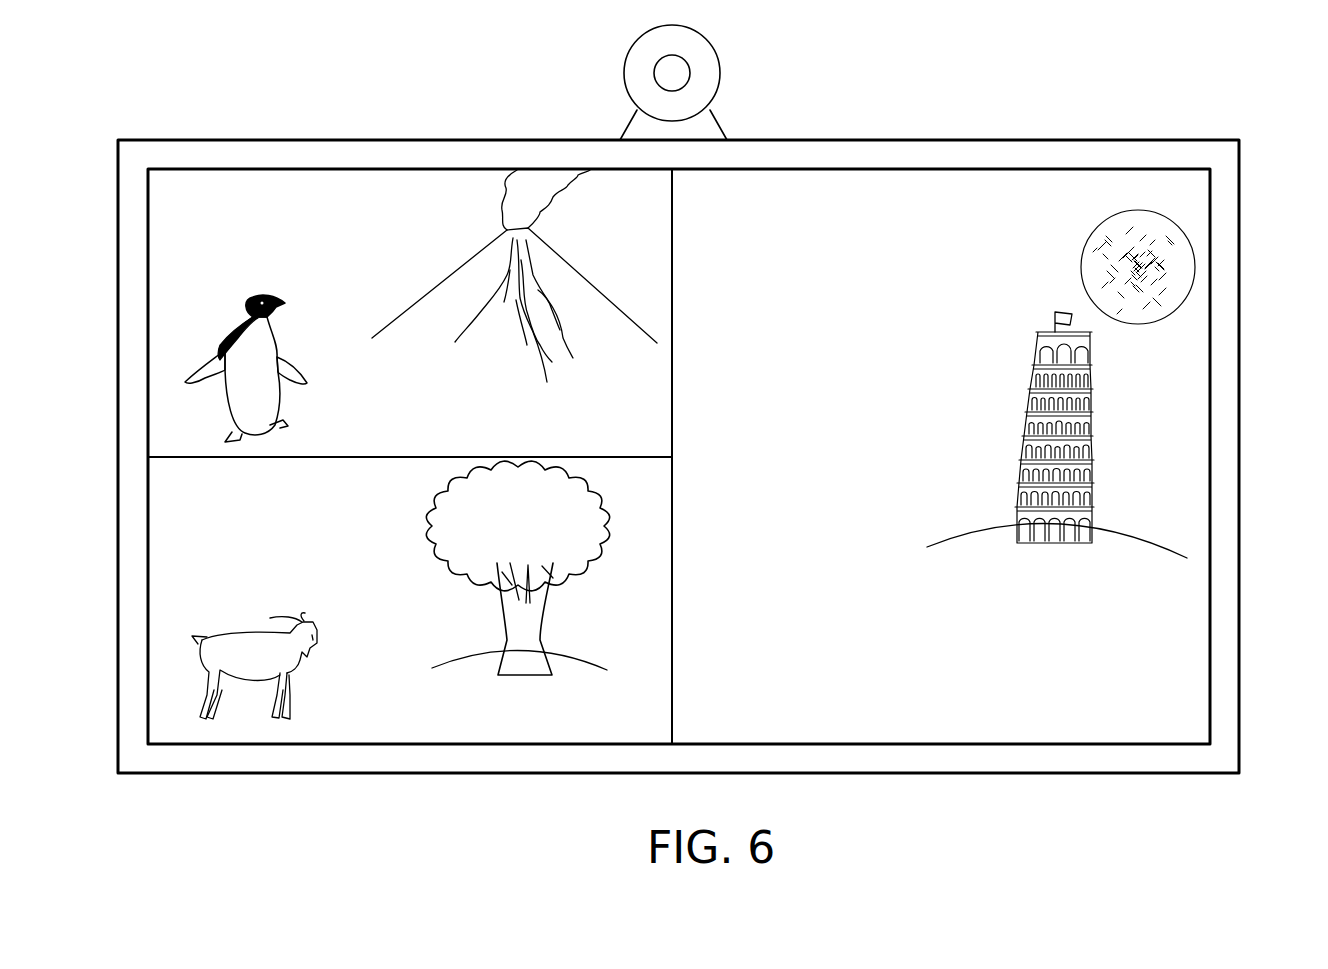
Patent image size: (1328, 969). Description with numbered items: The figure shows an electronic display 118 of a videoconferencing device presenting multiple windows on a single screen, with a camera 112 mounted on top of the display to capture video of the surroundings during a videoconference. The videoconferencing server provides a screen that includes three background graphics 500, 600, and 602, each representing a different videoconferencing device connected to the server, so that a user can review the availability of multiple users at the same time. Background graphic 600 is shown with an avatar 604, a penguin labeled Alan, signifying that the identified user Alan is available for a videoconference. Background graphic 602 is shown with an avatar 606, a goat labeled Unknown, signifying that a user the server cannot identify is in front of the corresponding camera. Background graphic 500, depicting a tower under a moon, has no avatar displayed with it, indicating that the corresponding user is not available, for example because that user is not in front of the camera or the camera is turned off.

The camera 112 is at (625, 72).
The electronic display 118 is at (118, 468).
The background graphic 600 is at (348, 313).
The background graphic 602 is at (317, 590).
The avatar 604 is at (270, 402).
The avatar 606 is at (290, 662).
The background graphic 500 is at (1193, 673).